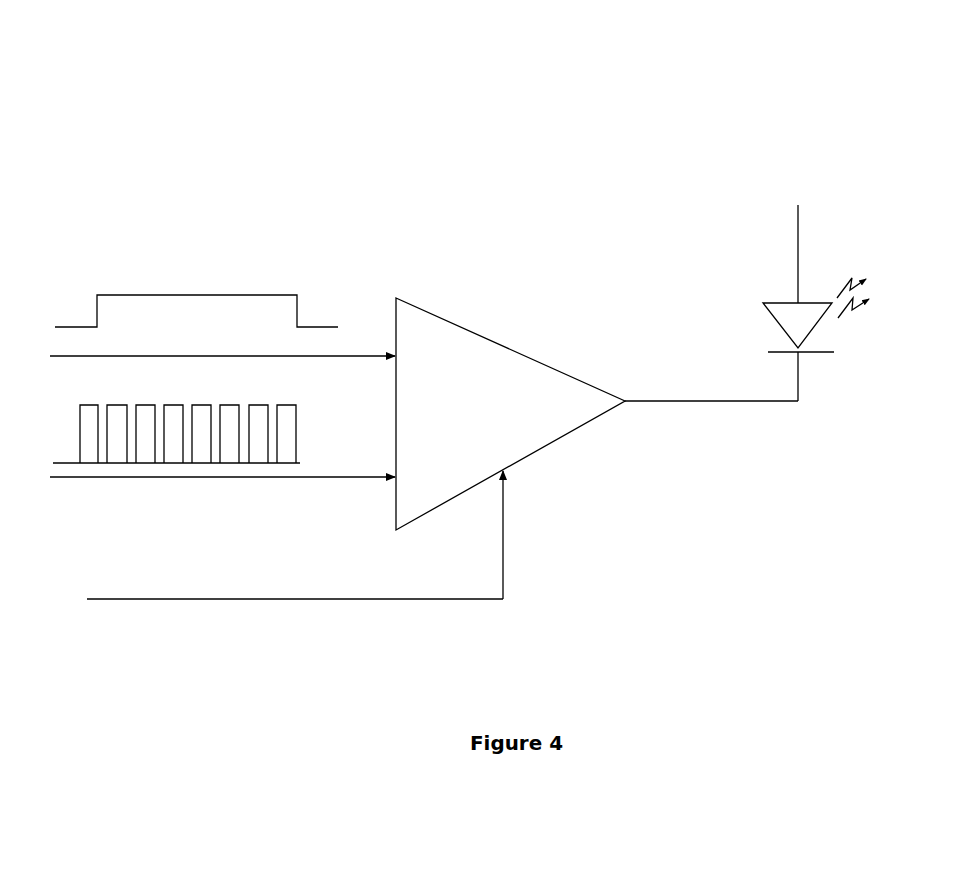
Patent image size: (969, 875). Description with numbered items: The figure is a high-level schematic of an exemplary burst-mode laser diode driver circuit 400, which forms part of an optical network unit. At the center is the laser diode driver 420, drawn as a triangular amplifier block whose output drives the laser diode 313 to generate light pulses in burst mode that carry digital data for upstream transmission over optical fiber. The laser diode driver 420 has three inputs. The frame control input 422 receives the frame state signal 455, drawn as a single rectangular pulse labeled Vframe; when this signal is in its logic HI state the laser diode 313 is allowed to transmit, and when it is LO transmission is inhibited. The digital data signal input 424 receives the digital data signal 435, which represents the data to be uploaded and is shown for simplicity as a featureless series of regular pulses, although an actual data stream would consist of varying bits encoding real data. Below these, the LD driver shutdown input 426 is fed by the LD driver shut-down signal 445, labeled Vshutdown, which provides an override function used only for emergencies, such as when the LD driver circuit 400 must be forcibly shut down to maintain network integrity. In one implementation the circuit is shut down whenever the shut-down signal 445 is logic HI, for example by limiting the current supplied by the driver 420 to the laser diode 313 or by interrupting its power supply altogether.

The LD driver circuit 400 is at (448, 122).
The frame state signal (Vframe) 455 is at (253, 263).
The frame control input 422 is at (390, 363).
The digital data signal 435 is at (297, 420).
The digital data signal input 424 is at (390, 485).
The laser diode driver 420 is at (475, 330).
The LD driver shutdown input 426 is at (508, 476).
The LD driver shut-down signal 445 is at (157, 597).
The laser diode (LD) 313 is at (758, 307).